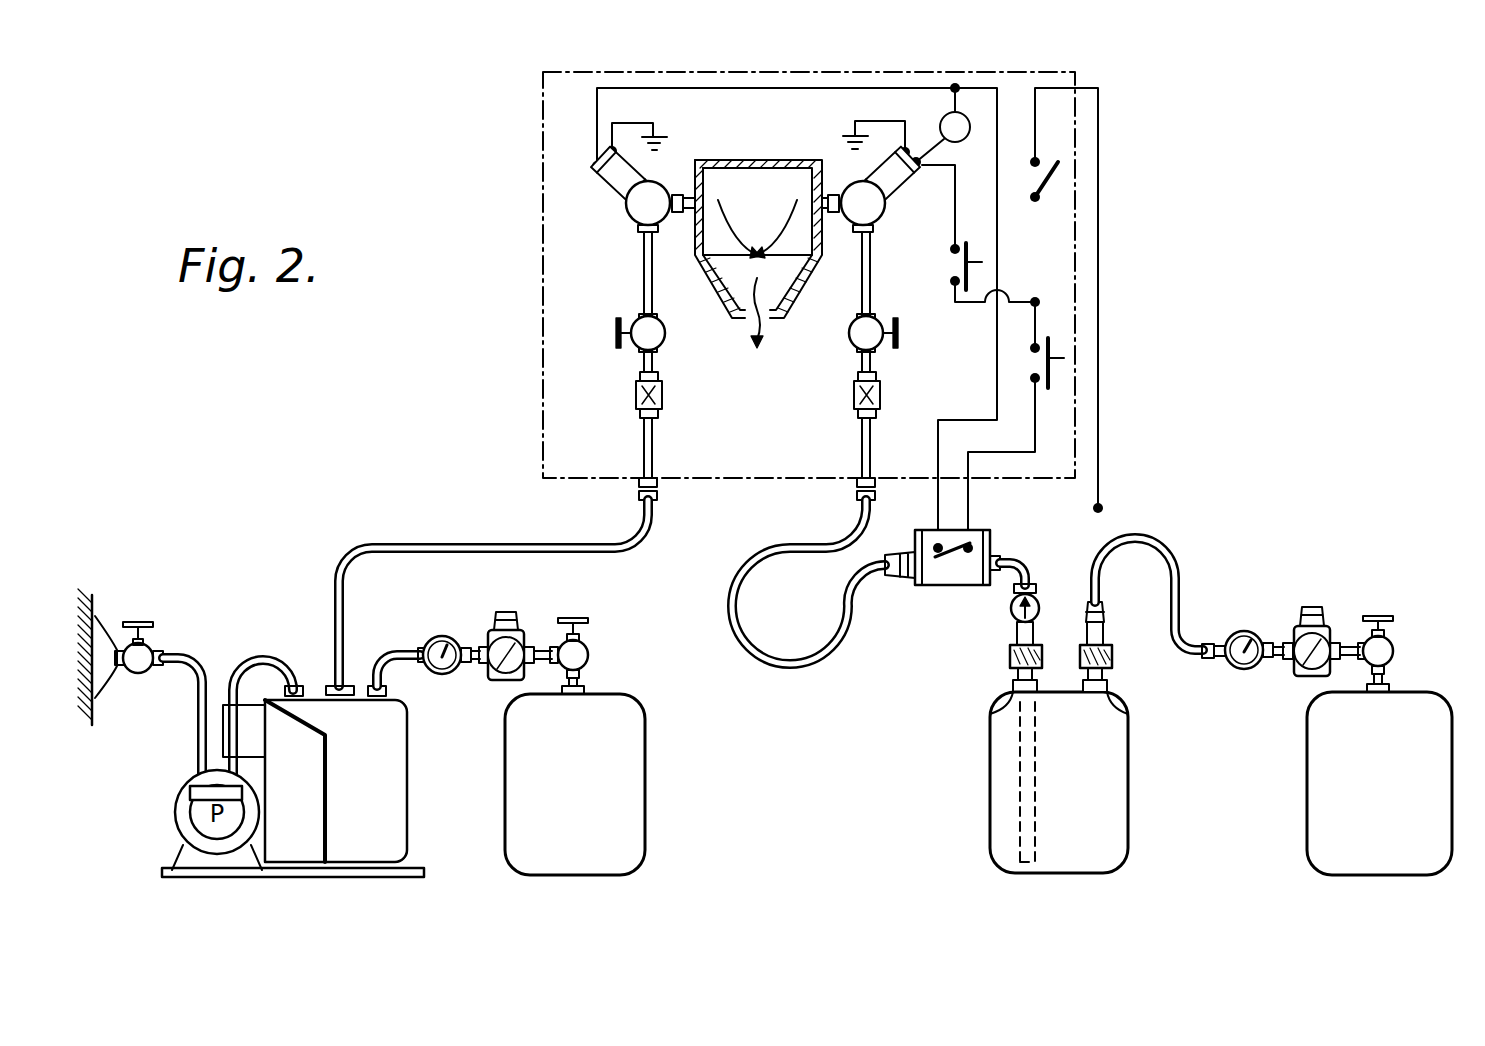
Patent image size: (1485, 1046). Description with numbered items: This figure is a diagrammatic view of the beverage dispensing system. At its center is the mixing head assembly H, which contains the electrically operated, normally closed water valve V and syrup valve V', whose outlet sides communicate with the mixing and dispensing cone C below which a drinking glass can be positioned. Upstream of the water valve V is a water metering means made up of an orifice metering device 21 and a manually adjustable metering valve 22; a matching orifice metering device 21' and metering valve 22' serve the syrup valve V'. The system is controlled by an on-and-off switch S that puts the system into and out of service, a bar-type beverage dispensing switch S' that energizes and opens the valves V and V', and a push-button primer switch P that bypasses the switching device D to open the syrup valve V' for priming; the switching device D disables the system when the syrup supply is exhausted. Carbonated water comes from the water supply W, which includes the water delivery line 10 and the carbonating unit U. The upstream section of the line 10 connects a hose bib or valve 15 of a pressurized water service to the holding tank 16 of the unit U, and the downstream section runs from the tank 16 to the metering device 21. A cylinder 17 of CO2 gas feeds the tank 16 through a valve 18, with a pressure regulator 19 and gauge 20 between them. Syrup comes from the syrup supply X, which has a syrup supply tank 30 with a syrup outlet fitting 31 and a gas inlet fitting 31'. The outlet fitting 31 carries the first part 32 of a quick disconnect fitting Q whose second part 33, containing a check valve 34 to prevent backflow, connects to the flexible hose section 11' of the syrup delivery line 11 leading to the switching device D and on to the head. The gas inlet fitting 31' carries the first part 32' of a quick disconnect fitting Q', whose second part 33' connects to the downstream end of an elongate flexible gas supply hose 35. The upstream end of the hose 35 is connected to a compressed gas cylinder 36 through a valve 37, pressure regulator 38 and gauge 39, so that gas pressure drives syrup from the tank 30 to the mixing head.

The water delivery line 10 is at (656, 512).
The syrup delivery line 11 is at (777, 571).
The flexible hose section 11' is at (1024, 548).
The hose bib or valve 15 is at (140, 674).
The holding tank 16 is at (400, 797).
The tank or cylinder of CO2 gas 17 is at (623, 772).
The valve 18 is at (590, 655).
The pressure regulator 19 is at (520, 642).
The gauge 20 is at (462, 640).
The orifice metering device 21 is at (682, 399).
The orifice metering device 21' is at (834, 396).
The metering valve 22 is at (672, 339).
The metering valve 22' is at (843, 335).
The syrup supply tank 30 is at (1000, 812).
The syrup outlet fitting 31 is at (970, 723).
The gas inlet fitting 31' is at (1155, 710).
The first part of quick disconnect fitting 32 is at (986, 685).
The first part of quick disconnect fitting 32' is at (1137, 684).
The second part of quick disconnect fitting 33 is at (993, 645).
The second part of quick disconnect fitting 33' is at (1114, 627).
The check valve 34 is at (1009, 612).
The gas supply hose 35 is at (1185, 520).
The compressed gas cylinder 36 is at (1322, 786).
The valve 37 is at (1435, 640).
The pressure regulator 38 is at (1325, 625).
The gauge 39 is at (1252, 630).
The mixing and dispensing cone C is at (788, 162).
The water valve V is at (627, 189).
The syrup valve V' is at (873, 202).
The mixing head assembly H is at (638, 268).
The primer switch P is at (948, 265).
The on-and-off switch S is at (1093, 179).
The beverage dispensing switch S' is at (1100, 353).
The switching device D is at (937, 585).
The quick disconnect fitting Q is at (981, 665).
The quick disconnect fitting Q' is at (1125, 648).
The syrup supply X is at (990, 770).
The water supply W is at (275, 640).
The carbonating unit U is at (400, 780).